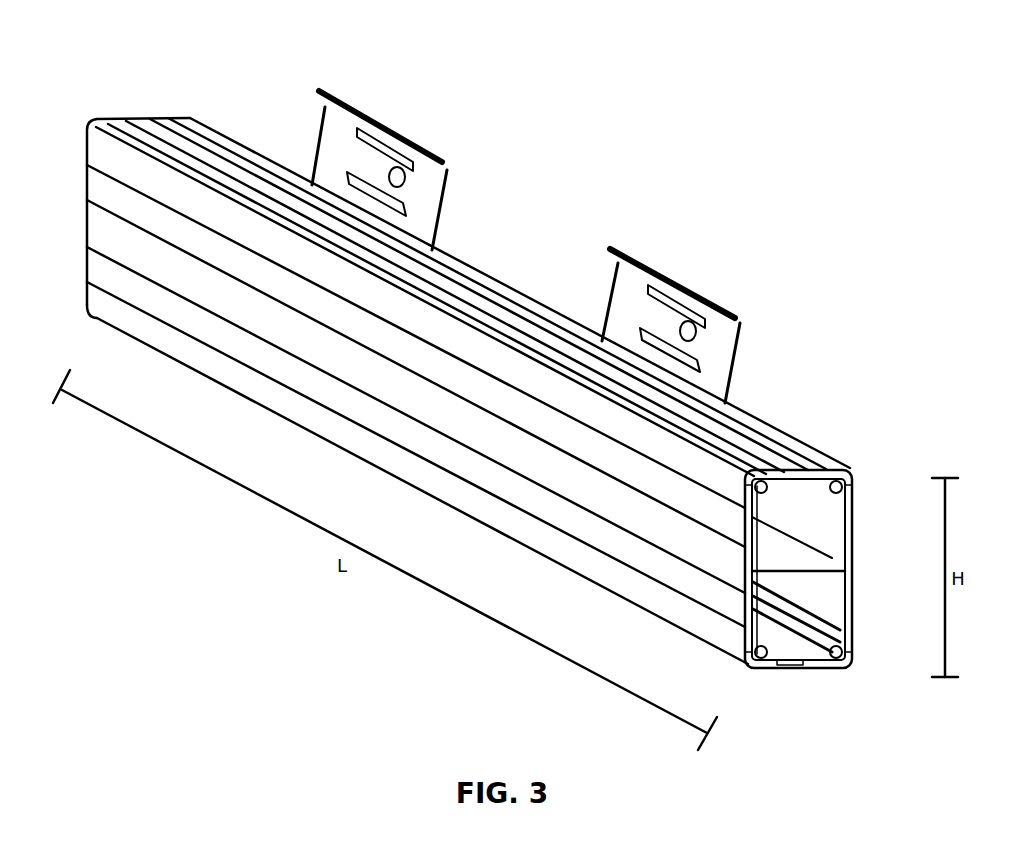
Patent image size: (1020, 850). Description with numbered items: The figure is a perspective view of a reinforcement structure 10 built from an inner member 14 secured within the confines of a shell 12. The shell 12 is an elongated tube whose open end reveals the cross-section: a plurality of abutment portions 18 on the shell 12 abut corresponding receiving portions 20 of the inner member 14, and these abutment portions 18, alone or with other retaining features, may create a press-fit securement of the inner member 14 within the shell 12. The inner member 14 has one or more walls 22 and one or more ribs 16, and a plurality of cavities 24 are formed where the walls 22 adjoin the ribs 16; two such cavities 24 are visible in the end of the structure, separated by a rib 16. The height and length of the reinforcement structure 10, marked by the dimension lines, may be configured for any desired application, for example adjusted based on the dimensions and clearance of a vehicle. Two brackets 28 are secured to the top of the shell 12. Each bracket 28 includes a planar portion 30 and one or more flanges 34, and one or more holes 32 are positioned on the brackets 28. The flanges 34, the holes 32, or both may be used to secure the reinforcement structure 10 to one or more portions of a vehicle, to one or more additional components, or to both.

The reinforcement structure 10 is at (120, 68).
The shell 12 is at (108, 153).
The inner member 14 is at (797, 488).
The rib 16 is at (807, 560).
The abutment portion 18 is at (752, 483).
The receiving portion 20 is at (762, 494).
The wall 22 is at (748, 583).
The cavity 24 is at (822, 534).
The bracket 28 is at (348, 90).
The planar portion 30 is at (328, 170).
The hole 32 is at (410, 178).
The flange 34 is at (403, 143).